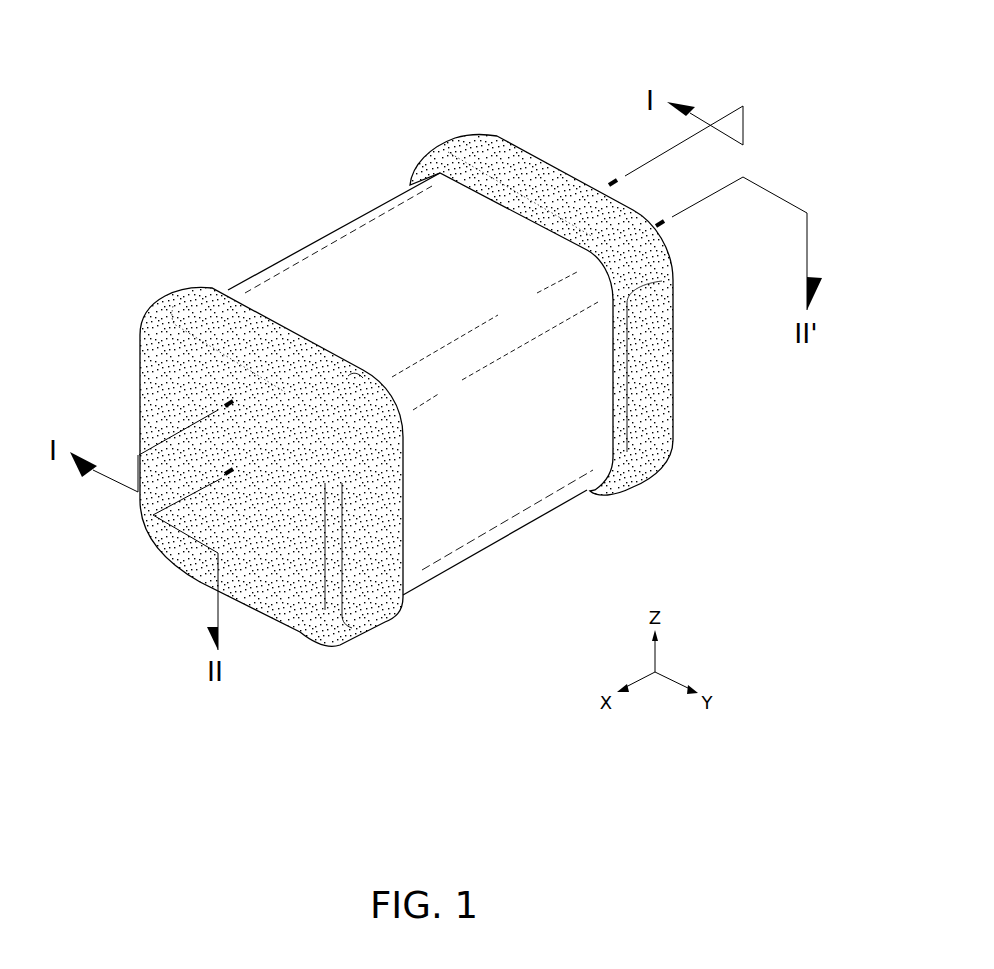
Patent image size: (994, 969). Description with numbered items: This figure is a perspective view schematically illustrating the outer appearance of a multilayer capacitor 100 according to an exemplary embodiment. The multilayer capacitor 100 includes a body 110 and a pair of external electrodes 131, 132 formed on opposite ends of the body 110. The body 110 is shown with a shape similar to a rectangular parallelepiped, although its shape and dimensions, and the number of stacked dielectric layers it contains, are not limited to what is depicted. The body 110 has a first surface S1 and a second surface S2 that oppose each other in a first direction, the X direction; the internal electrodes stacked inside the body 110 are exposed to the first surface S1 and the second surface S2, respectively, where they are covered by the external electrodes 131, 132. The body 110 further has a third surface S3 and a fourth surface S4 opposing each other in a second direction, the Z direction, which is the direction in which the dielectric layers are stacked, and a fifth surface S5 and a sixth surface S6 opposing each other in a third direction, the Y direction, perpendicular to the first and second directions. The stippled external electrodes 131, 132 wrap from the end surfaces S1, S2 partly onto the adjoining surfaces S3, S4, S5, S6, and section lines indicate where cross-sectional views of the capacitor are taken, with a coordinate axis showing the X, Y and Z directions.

The multilayer capacitor 100 is at (402, 34).
The body 110 is at (344, 232).
The external electrode 131 is at (155, 389).
The external electrode 132 is at (537, 180).
The first surface S1 is at (182, 542).
The second surface S2 is at (647, 335).
The third surface S3 is at (402, 229).
The fourth surface S4 is at (428, 533).
The fifth surface S5 is at (350, 272).
The sixth surface S6 is at (498, 490).